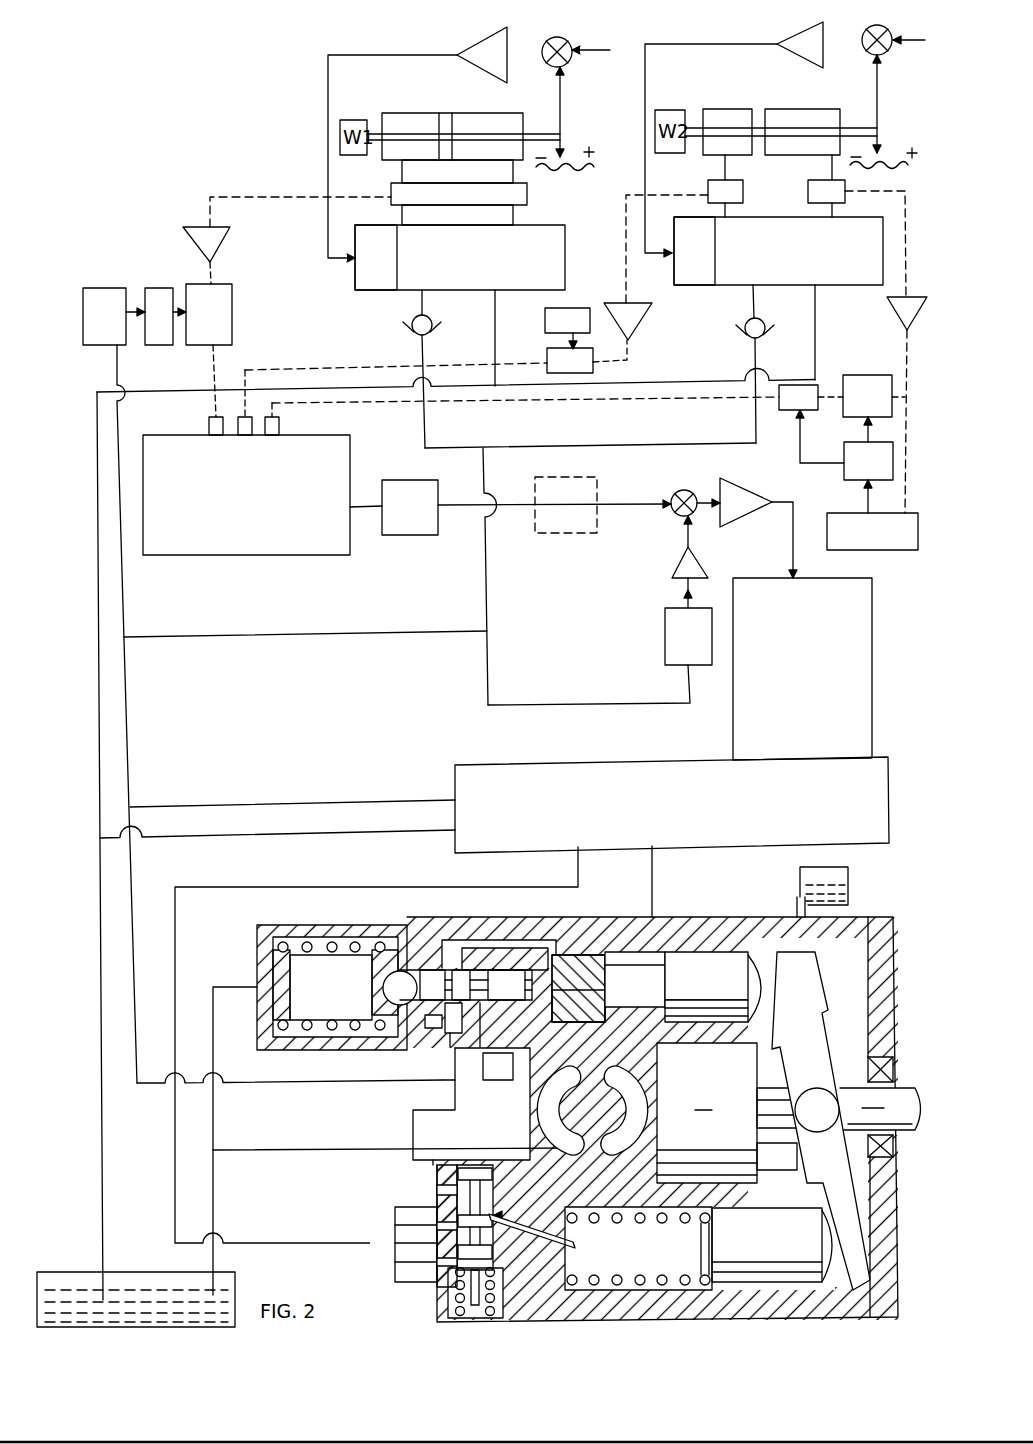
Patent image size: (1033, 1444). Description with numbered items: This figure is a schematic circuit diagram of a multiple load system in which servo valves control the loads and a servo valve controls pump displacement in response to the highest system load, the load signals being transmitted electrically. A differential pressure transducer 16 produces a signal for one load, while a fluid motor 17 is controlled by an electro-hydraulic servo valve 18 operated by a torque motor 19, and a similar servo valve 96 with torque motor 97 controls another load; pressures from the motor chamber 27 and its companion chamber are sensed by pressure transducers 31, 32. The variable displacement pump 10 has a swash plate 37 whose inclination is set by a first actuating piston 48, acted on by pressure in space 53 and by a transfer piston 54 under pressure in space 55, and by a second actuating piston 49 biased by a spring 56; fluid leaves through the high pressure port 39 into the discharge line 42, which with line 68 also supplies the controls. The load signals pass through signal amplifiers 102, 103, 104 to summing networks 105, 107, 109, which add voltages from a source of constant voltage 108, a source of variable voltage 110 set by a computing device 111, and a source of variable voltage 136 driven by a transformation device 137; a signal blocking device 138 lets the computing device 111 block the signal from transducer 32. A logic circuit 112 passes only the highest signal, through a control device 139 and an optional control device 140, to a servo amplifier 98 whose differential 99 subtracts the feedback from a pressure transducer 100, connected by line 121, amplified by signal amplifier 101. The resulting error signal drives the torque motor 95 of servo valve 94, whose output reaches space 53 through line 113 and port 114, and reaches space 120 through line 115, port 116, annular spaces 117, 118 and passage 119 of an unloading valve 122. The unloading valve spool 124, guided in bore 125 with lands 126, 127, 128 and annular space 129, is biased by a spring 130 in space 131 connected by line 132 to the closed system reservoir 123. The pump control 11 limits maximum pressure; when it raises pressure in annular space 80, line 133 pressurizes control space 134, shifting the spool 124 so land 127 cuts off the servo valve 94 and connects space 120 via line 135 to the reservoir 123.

The variable displacement pump 10 is at (896, 1238).
The pump control 11 is at (300, 1046).
The differential pressure transducer 16 is at (454, 169).
The fluid motor 17 is at (725, 122).
The electro-hydraulic servo valve 18 is at (778, 251).
The torque motor 19 is at (694, 251).
The motor chamber 27 is at (810, 148).
The pressure transducer 31 is at (742, 192).
The pressure transducer 32 is at (822, 192).
The swash plate 37 is at (818, 1052).
The high pressure port 39 is at (630, 1108).
The discharge line 42 is at (291, 636).
The first actuating piston 48 is at (713, 987).
The second actuating piston 49 is at (790, 1246).
The space 53 is at (635, 979).
The transfer piston 54 is at (578, 988).
The space 55 is at (578, 1006).
The spring 56 is at (652, 1278).
The line 68 is at (331, 801).
The annular space 80 is at (456, 950).
The servo valve 94 is at (672, 805).
The torque motor 95 is at (802, 669).
The servo valve 96 is at (460, 257).
The torque motor 97 is at (376, 257).
The servo amplifier 98 is at (740, 492).
The differential 99 is at (686, 490).
The pressure transducer 100 is at (688, 636).
The signal amplifier 101 is at (676, 567).
The signal amplifier 102 is at (220, 235).
The signal amplifier 103 is at (637, 312).
The signal amplifier 104 is at (898, 306).
The summing network 105 is at (209, 314).
The summing network 107 is at (570, 360).
The source of constant voltage 108 is at (567, 320).
The summing network 109 is at (867, 396).
The source of variable voltage 110 is at (868, 461).
The computing device 111 is at (872, 531).
The logic circuit 112 is at (246, 486).
The line 113 is at (656, 876).
The port 114 is at (660, 926).
The line 115 is at (580, 885).
The port 116 is at (437, 1262).
The annular space 117 is at (500, 1262).
The annular space 118 is at (437, 1226).
The passage 119 is at (576, 1245).
The space 120 is at (684, 1249).
The line 121 is at (586, 702).
The unloading valve 122 is at (495, 1185).
The system reservoir 123 is at (850, 868).
The spool 124 is at (472, 1168).
The bore 125 is at (503, 1217).
The land 126 is at (503, 1176).
The land 127 is at (503, 1242).
The land 128 is at (505, 1272).
The annular space 129 is at (495, 1200).
The spring 130 is at (450, 1300).
The space 131 is at (505, 1300).
The line 132 is at (395, 1268).
The line 133 is at (412, 1116).
The control space 134 is at (455, 1165).
The line 135 is at (410, 1207).
The source of variable voltage 136 is at (155, 288).
The transformation device 137 is at (104, 316).
The signal blocking device 138 is at (798, 397).
The control device 139 is at (408, 535).
The control device 140 is at (570, 526).